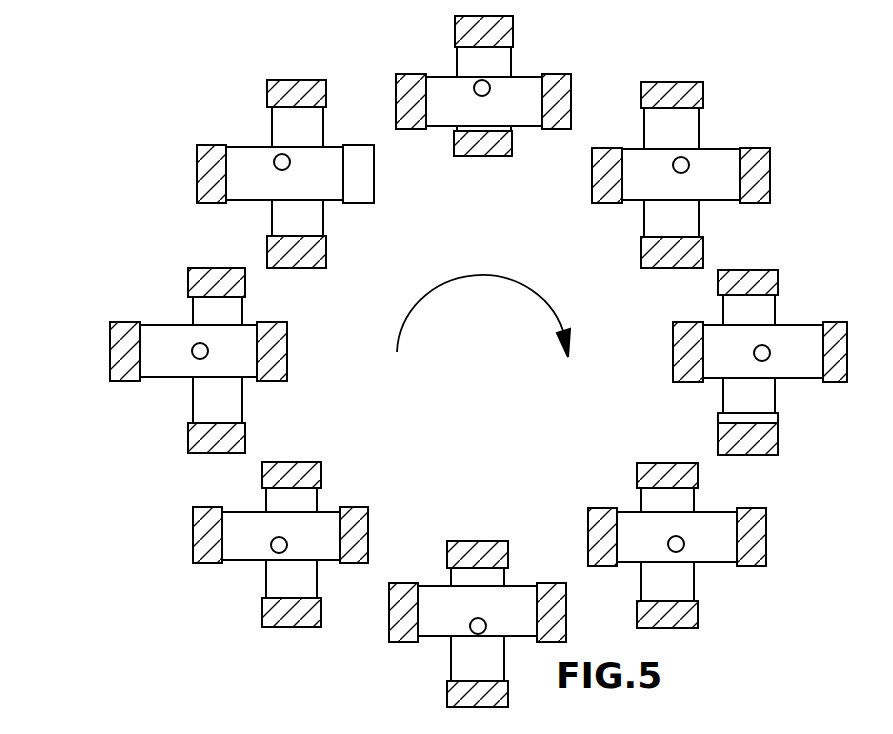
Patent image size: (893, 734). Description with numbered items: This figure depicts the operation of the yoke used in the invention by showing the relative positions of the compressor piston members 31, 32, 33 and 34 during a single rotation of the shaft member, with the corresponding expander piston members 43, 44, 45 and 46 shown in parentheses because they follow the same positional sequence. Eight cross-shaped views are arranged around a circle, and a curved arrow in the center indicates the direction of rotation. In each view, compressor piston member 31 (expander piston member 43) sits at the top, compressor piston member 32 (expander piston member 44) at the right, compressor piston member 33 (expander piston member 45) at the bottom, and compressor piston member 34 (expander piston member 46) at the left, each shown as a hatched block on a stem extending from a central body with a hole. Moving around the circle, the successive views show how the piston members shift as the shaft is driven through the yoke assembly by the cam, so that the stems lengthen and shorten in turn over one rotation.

The compressor piston member 31 is at (528, 23).
The expander piston member 43 is at (490, 16).
The compressor piston member 32 is at (594, 82).
The expander piston member 44 is at (557, 74).
The compressor piston member 33 is at (496, 170).
The expander piston member 45 is at (480, 158).
The compressor piston member 34 is at (392, 82).
The expander piston member 46 is at (397, 83).